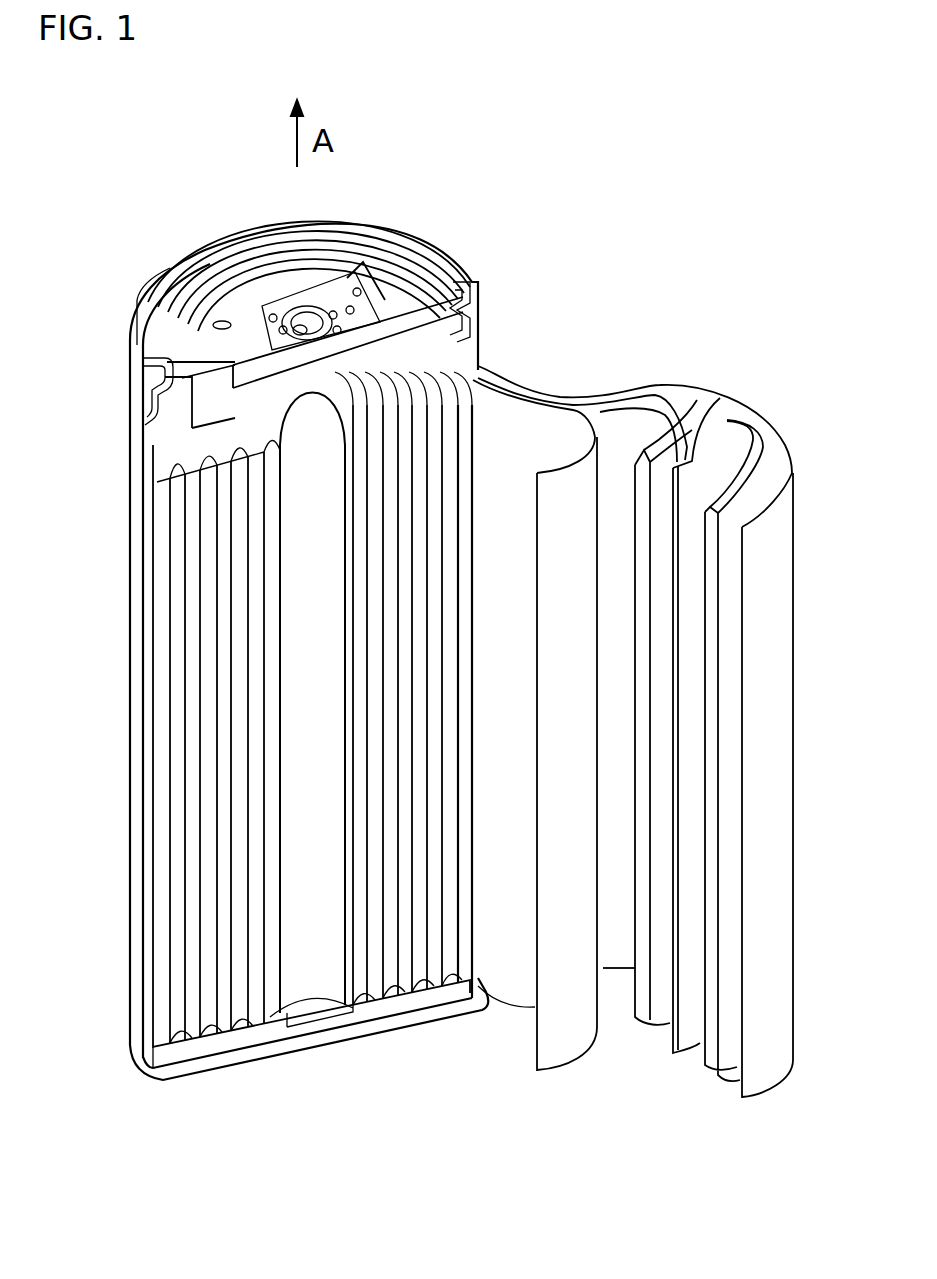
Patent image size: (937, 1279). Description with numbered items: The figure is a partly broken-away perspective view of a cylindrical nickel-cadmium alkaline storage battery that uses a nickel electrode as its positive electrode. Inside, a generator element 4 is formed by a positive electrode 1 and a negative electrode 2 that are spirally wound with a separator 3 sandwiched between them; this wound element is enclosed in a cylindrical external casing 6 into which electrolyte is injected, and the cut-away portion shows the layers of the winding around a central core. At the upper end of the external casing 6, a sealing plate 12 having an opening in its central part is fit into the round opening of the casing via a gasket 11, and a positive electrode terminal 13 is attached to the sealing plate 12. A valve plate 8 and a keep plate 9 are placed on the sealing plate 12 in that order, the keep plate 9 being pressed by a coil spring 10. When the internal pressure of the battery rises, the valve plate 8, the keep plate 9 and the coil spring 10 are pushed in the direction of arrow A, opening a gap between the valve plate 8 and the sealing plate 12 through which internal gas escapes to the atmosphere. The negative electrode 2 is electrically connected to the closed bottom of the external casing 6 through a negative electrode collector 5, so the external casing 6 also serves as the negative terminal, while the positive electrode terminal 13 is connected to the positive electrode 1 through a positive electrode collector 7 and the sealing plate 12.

The positive electrode 1 is at (653, 668).
The negative electrode 2 is at (710, 632).
The separator 3 is at (687, 570).
The generator element 4 is at (521, 731).
The negative electrode collector 5 is at (217, 1047).
The external casing 6 is at (150, 836).
The positive electrode collector 7 is at (190, 426).
The valve plate 8 is at (393, 303).
The keep plate 9 is at (358, 305).
The coil spring 10 is at (333, 310).
The gasket 11 is at (152, 401).
The sealing plate 12 is at (187, 313).
The positive electrode terminal 13 is at (305, 277).